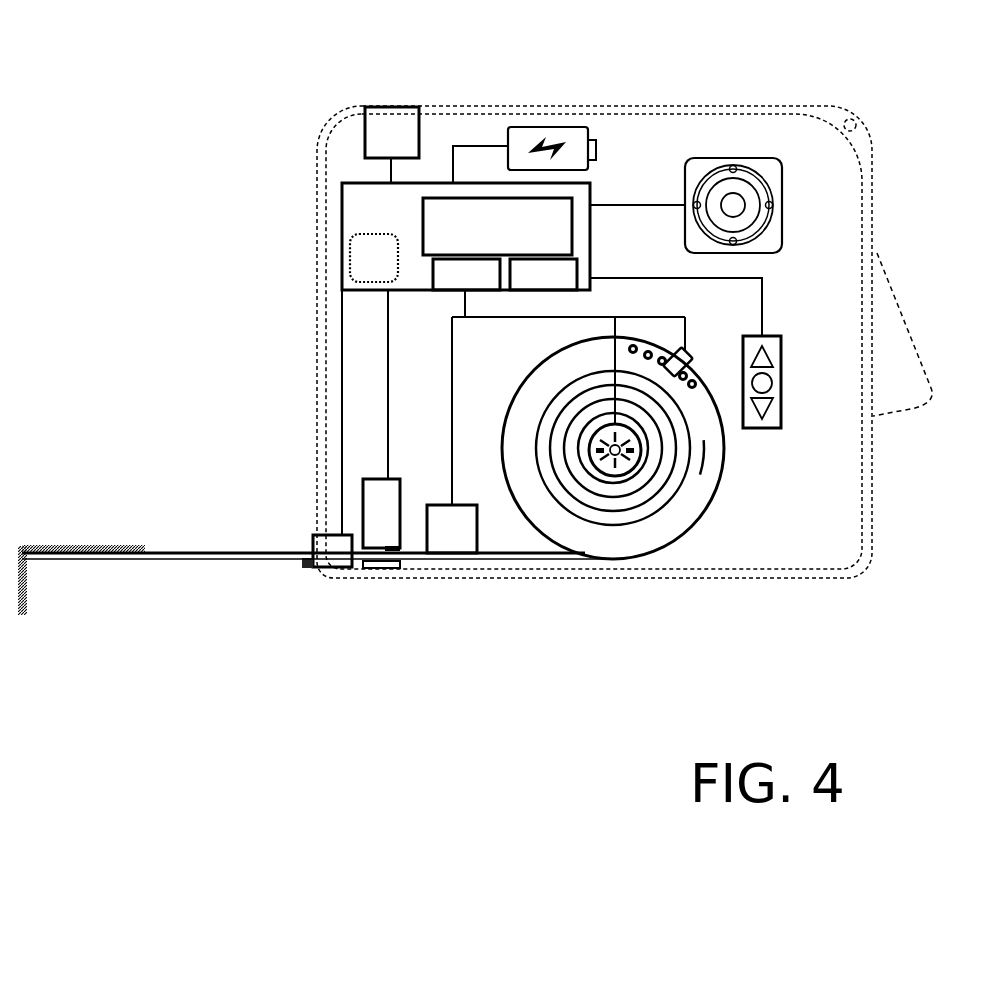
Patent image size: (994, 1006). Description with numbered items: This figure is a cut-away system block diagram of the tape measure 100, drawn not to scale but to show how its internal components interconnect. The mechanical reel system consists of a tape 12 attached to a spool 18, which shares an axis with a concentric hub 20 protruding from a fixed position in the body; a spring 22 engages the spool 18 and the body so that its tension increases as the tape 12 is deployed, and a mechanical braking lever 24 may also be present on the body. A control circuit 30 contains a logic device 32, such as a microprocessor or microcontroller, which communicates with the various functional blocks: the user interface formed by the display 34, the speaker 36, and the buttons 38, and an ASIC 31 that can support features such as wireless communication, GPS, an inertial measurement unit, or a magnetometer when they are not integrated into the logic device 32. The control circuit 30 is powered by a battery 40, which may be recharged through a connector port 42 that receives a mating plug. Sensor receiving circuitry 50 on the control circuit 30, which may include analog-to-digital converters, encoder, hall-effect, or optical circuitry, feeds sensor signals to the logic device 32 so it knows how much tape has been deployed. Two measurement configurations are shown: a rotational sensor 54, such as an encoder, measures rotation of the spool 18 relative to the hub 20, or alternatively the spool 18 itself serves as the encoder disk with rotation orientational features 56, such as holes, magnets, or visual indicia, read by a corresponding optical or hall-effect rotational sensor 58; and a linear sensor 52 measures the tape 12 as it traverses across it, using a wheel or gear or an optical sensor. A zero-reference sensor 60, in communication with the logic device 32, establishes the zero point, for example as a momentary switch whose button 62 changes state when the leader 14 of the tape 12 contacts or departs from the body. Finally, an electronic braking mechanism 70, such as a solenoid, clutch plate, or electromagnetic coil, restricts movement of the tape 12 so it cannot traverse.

The tape measure 100 is at (208, 100).
The tape 12 is at (172, 562).
The leader 14 is at (28, 570).
The spool 18 is at (613, 560).
The hub 20 is at (592, 453).
The spring 22 is at (704, 462).
The braking lever 24 is at (906, 389).
The control circuit 30 is at (386, 222).
The ASIC 31 is at (554, 289).
The logic device 32 is at (387, 271).
The display 34 is at (512, 241).
The speaker 36 is at (781, 222).
The buttons 38 is at (781, 395).
The battery 40 is at (596, 150).
The connector port 42 is at (404, 150).
The sensor receiving circuitry 50 is at (479, 289).
The linear sensor 52 is at (466, 542).
The rotational sensor 54 is at (630, 454).
The rotation orientational features 56 is at (690, 373).
The rotational sensor 58 is at (688, 349).
The zero-reference sensor 60 is at (333, 568).
The button 62 is at (307, 570).
The electronic braking mechanism 70 is at (394, 529).